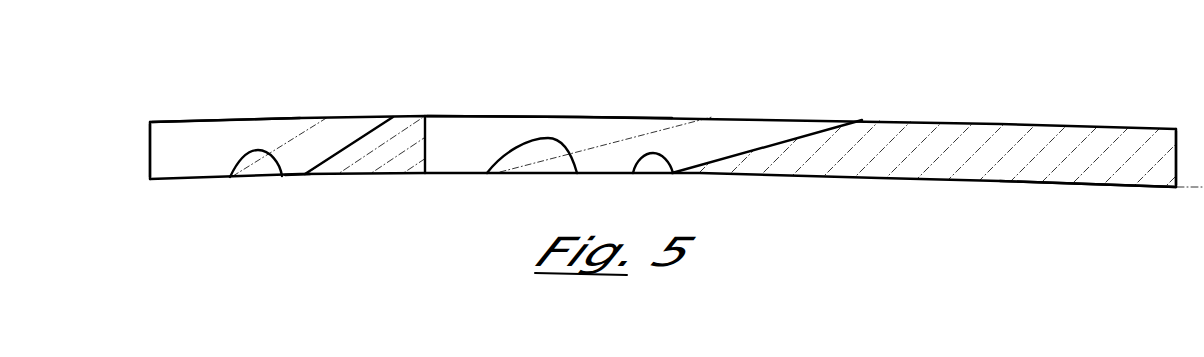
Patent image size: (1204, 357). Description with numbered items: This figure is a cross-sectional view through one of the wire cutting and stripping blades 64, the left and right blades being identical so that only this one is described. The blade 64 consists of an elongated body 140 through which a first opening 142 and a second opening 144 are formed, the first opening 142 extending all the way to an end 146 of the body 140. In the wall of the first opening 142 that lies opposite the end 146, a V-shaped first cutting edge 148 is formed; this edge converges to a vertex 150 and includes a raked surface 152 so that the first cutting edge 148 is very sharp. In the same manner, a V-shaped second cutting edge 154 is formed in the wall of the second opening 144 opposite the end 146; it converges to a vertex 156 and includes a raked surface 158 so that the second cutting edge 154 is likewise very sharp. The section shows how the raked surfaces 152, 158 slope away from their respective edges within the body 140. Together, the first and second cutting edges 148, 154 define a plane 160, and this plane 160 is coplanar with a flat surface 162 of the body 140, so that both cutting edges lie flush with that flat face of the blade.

The wire cutting and stripping blade 64 is at (868, 96).
The elongated body 140 is at (1178, 156).
The first opening 142 is at (218, 135).
The second opening 144 is at (578, 117).
The end 146 is at (148, 135).
The first cutting edge 148 is at (231, 176).
The vertex 150 is at (297, 175).
The raked surface 152 is at (362, 135).
The second cutting edge 154 is at (488, 173).
The vertex 156 is at (633, 173).
The raked surface 158 is at (784, 143).
The plane 160 is at (1203, 168).
The flat surface 162 is at (1055, 186).